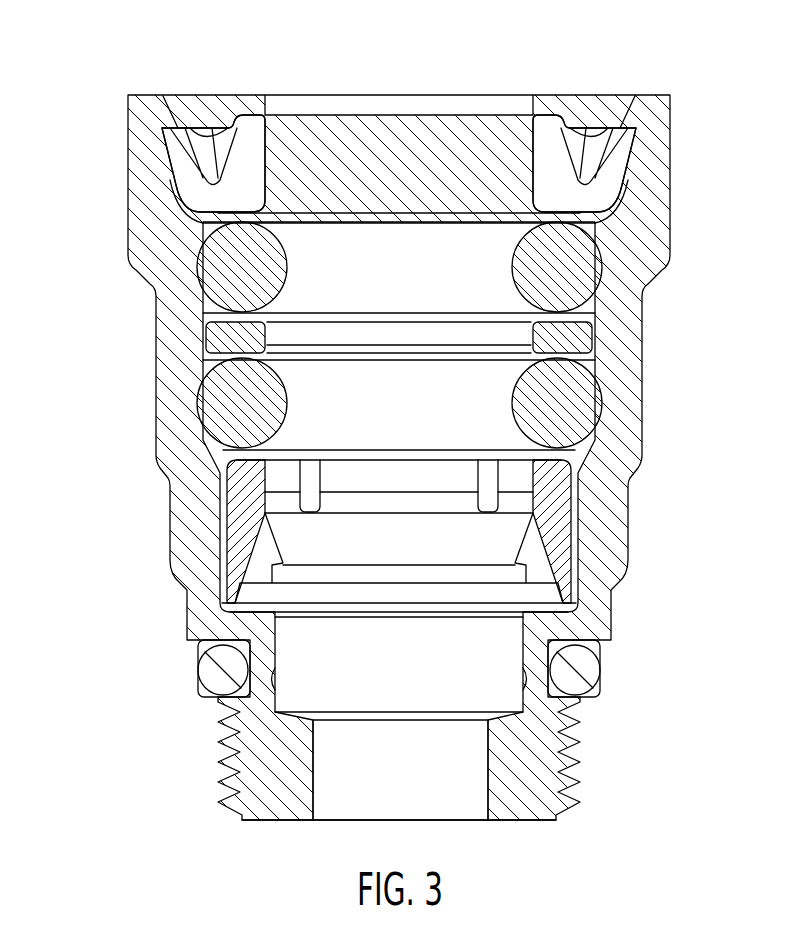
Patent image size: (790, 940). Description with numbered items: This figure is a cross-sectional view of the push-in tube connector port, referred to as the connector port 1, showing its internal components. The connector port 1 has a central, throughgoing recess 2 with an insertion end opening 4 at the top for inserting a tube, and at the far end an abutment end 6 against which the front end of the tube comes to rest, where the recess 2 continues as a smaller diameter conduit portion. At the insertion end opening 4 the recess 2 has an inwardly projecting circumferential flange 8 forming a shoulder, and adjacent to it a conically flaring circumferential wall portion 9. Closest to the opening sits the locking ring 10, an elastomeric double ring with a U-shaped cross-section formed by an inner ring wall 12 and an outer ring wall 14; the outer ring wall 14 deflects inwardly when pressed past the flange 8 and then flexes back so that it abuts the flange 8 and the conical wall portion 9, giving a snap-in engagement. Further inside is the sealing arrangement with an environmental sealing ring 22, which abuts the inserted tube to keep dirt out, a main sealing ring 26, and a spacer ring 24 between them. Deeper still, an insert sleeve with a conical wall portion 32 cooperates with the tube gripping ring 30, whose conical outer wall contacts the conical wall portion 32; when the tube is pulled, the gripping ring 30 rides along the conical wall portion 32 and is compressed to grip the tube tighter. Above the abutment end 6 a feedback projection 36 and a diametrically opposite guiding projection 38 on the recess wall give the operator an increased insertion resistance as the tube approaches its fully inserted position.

The connector port 1 is at (120, 398).
The central recess 2 is at (442, 143).
The insertion end opening 4 is at (490, 94).
The abutment end 6 is at (500, 713).
The circumferential flange 8 is at (186, 94).
The conically flaring circumferential wall portion 9 is at (187, 217).
The locking ring 10 is at (288, 165).
The inner ring wall 12 is at (533, 158).
The outer ring wall 14 is at (219, 125).
The environmental sealing ring 22 is at (513, 260).
The spacer ring 24 is at (267, 337).
The main sealing ring 26 is at (292, 397).
The tube gripping ring 30 is at (283, 543).
The conical wall portion 32 is at (283, 625).
The feedback projection 36 is at (276, 678).
The guiding projection 38 is at (522, 670).